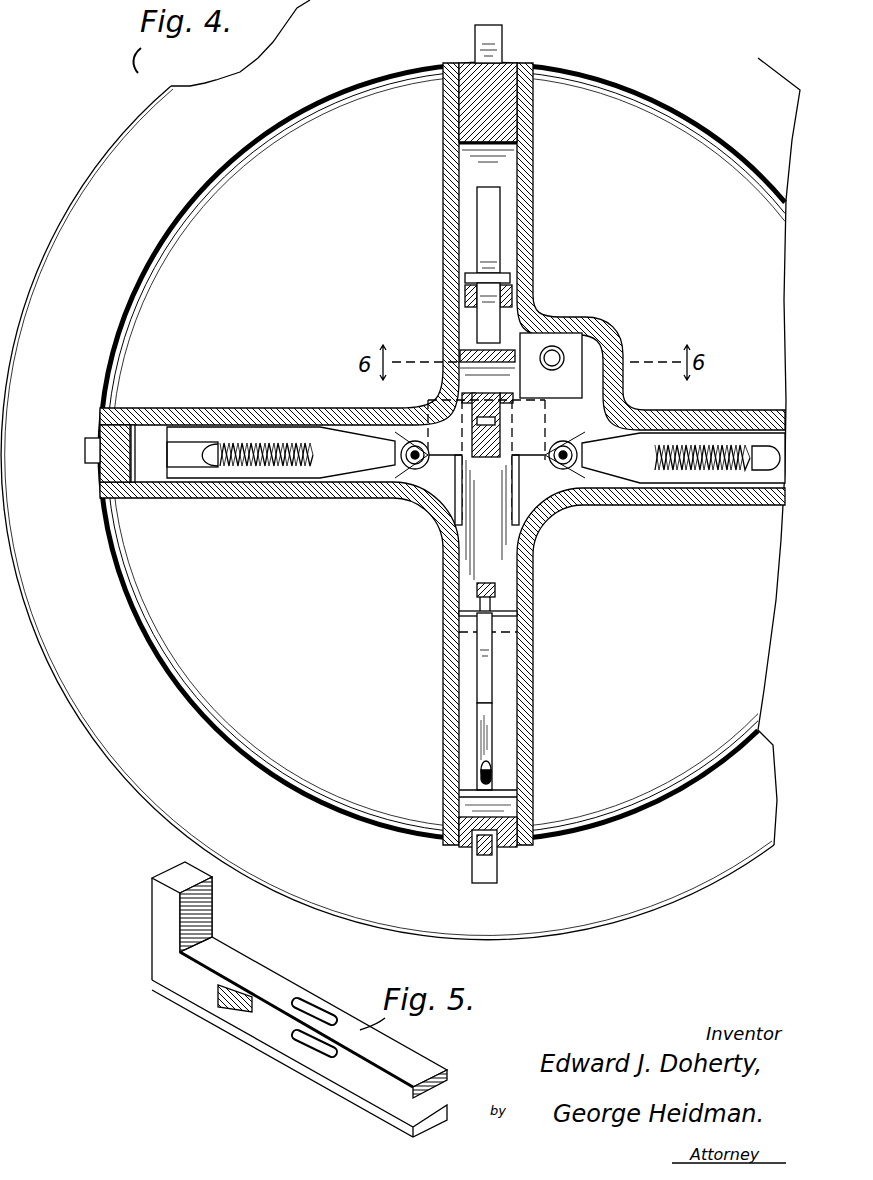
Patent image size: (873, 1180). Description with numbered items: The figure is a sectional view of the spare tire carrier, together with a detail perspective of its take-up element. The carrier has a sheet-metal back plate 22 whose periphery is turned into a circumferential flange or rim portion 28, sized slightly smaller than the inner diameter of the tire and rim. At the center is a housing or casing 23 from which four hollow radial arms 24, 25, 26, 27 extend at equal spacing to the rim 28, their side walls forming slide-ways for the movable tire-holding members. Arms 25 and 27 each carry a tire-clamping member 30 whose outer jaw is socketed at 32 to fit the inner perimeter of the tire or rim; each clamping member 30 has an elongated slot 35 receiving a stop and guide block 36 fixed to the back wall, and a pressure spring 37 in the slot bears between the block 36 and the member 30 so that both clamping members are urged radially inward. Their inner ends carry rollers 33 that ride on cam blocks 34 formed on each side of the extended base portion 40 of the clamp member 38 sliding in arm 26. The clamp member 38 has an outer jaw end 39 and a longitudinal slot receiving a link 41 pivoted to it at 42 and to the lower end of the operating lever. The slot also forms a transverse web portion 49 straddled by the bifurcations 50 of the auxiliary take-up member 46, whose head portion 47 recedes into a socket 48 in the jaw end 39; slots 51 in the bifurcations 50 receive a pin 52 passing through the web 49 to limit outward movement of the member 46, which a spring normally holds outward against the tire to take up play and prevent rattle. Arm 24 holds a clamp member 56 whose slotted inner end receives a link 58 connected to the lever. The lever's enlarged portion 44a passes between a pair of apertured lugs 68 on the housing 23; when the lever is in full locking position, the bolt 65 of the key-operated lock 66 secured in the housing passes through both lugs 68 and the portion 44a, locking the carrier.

In FIG. 4, the back plate 22 is at (708, 68).
In FIG. 4, the flange or rim portion 28 is at (701, 125).
In FIG. 4, the radially disposed hollow arm 24 is at (443, 178).
In FIG. 4, the central housing or casing 23 is at (593, 322).
In FIG. 4, the radially disposed hollow arm 25 is at (215, 410).
In FIG. 4, the radially disposed hollow arm 26 is at (442, 715).
In FIG. 4, the radially disposed hollow arm 27 is at (745, 405).
In FIG. 4, the clamp member 56 is at (528, 156).
In FIG. 4, the link 58 is at (497, 265).
In FIG. 4, the apertured lugs 68 is at (470, 350).
In FIG. 4, the key operated lock 66 is at (580, 357).
In FIG. 4, the latch member or bolt 65 is at (518, 362).
In FIG. 4, the enlarged portion of lever 44a is at (500, 348).
In FIG. 4, the extended base portion of clamp member 40 is at (452, 512).
In FIG. 4, the roller 33 is at (395, 487).
In FIG. 4, the cam block 34 is at (562, 542).
In FIG. 4, the elongated slot 35 is at (290, 470).
In FIG. 4, the stop and guide block 36 is at (185, 445).
In FIG. 4, the pressure spring 37 is at (270, 447).
In FIG. 4, the tire-clamping member 30 is at (148, 500).
In FIG. 4, the link 41 is at (497, 592).
In FIG. 4, the pivot 42 is at (440, 650).
In FIG. 4, the web portion 49 is at (490, 678).
In FIG. 4, the bifurcations 50 is at (488, 718).
In FIG. 5, the bifurcations 50 is at (373, 1070).
In FIG. 4, the clamp member 38 is at (457, 745).
In FIG. 4, the pin 52 is at (492, 762).
In FIG. 4, the slots 51 is at (492, 773).
In FIG. 5, the slots 51 is at (292, 1033).
In FIG. 4, the auxiliary clamp or take-up member 46 is at (478, 793).
In FIG. 5, the auxiliary clamp or take-up member 46 is at (248, 968).
In FIG. 4, the socket 48 is at (455, 823).
In FIG. 4, the head portion 47 is at (477, 840).
In FIG. 5, the head portion 47 is at (160, 918).
In FIG. 4, the outer or jaw end 39 is at (486, 852).
In FIG. 4, the socket 32 is at (98, 465).